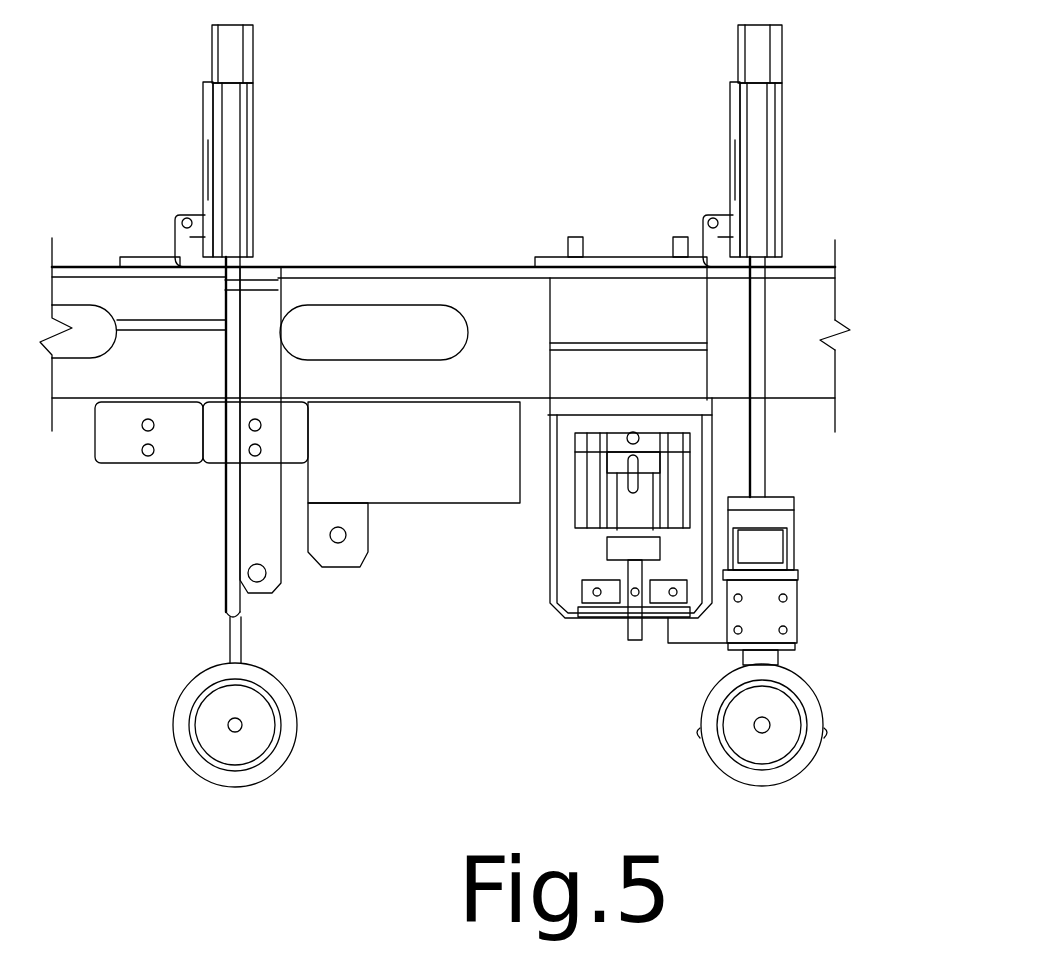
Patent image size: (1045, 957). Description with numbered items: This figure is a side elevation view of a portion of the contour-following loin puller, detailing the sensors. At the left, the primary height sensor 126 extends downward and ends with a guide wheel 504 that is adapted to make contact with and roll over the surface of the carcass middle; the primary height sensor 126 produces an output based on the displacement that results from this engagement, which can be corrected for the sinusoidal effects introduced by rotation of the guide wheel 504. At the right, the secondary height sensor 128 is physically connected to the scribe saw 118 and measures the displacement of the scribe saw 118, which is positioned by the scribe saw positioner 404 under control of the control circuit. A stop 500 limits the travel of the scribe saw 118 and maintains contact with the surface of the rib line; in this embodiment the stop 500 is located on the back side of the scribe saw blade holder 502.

The primary height sensor 126 is at (243, 170).
The secondary height sensor 128 is at (765, 164).
The scribe saw positioner 404 is at (623, 550).
The scribe saw 118 is at (733, 615).
The stop 500 is at (827, 730).
The scribe saw blade holder 502 is at (740, 710).
The guide wheel 504 is at (180, 726).